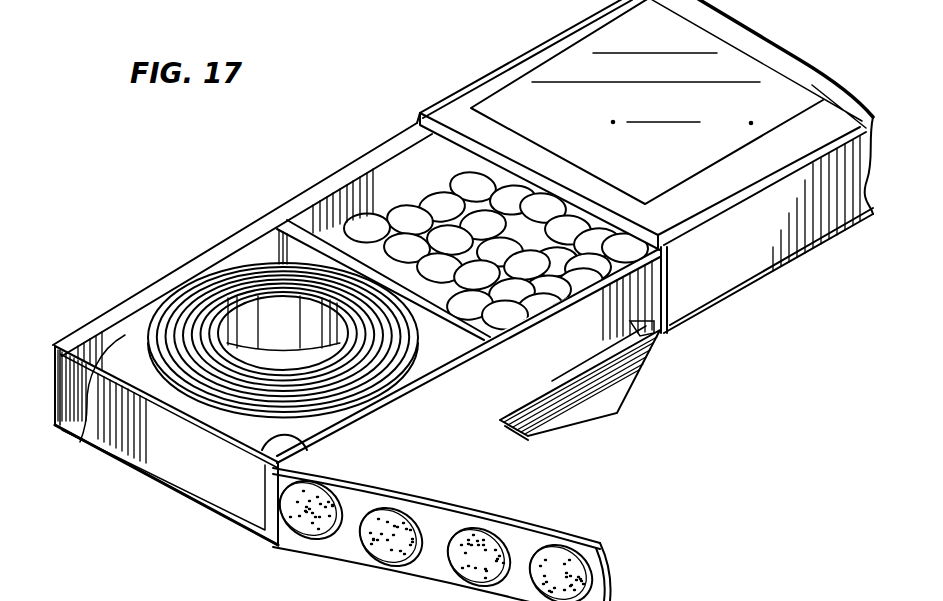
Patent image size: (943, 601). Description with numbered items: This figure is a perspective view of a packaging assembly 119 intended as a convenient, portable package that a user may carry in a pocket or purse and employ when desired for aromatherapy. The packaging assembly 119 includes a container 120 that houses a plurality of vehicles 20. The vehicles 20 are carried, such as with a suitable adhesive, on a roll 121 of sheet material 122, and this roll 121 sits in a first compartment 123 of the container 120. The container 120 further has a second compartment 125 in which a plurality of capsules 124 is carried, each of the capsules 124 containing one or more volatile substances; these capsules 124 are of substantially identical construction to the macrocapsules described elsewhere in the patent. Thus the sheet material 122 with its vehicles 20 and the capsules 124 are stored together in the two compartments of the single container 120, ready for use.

The packaging assembly 119 is at (134, 270).
The container 120 is at (338, 174).
The roll 121 is at (234, 282).
The sheet material 122 is at (436, 510).
The first compartment 123 is at (80, 441).
The capsules 124 is at (440, 205).
The second compartment 125 is at (480, 162).
The vehicles 20 is at (305, 494).